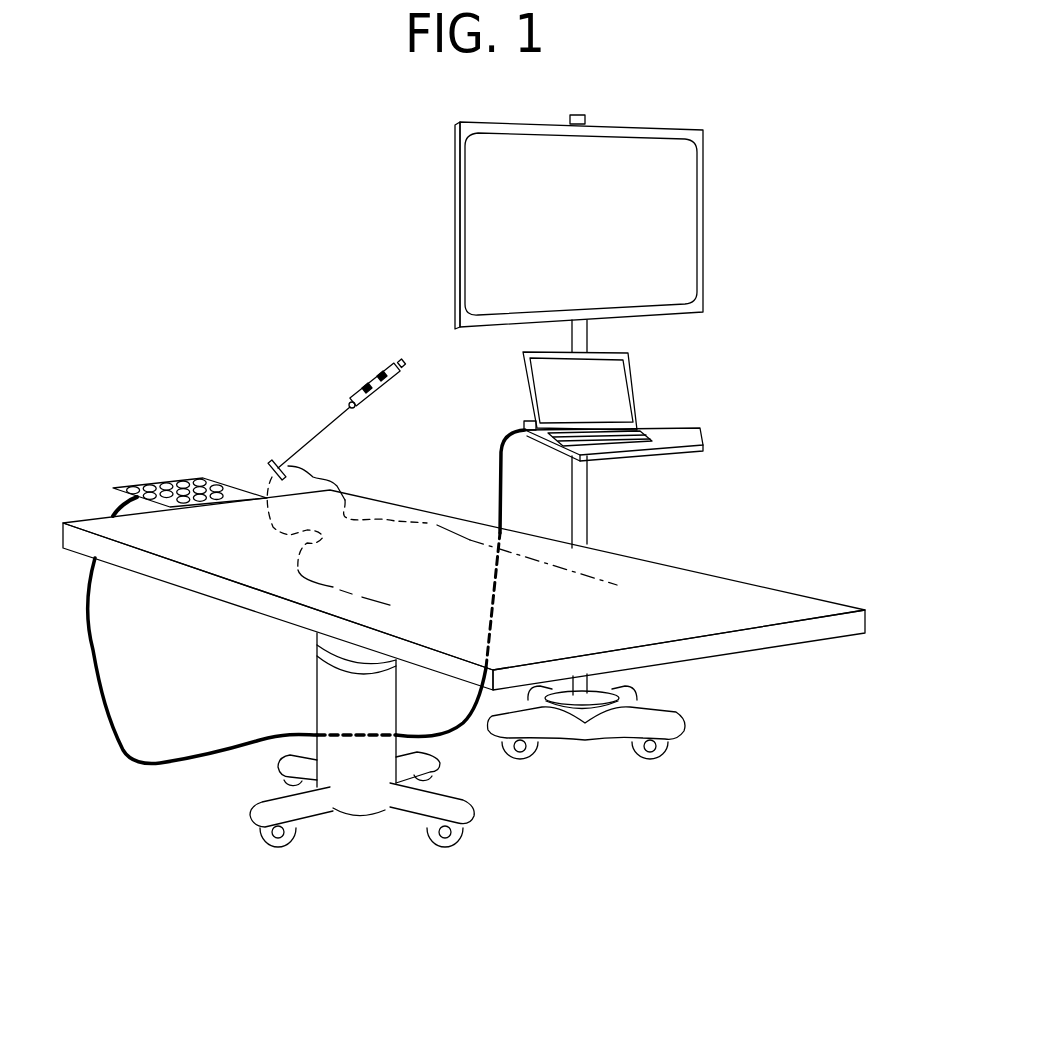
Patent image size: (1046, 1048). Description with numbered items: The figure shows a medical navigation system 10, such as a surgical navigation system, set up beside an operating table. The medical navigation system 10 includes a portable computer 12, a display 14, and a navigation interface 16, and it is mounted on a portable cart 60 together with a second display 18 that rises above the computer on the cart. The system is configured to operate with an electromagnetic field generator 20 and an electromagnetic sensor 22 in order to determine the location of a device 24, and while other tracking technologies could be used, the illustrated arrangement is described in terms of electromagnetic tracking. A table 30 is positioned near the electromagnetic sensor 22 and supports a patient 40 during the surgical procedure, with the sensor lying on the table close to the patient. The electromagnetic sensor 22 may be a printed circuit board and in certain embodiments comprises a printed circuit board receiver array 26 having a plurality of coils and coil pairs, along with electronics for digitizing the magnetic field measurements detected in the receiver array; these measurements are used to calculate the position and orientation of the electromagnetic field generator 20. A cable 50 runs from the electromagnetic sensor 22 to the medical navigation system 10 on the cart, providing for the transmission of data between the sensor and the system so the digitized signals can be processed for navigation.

The medical navigation system 10 is at (695, 396).
The portable computer 12 is at (697, 431).
The display 14 is at (665, 378).
The navigation interface 16 is at (523, 422).
The second display 18 is at (720, 216).
The electromagnetic field generator 20 is at (392, 391).
The electromagnetic sensor 22 is at (124, 457).
The device 24 is at (373, 374).
The printed circuit board receiver array 26 is at (193, 478).
The table 30 is at (827, 602).
The patient 40 is at (458, 538).
The cable 50 is at (115, 742).
The portable cart 60 is at (587, 498).